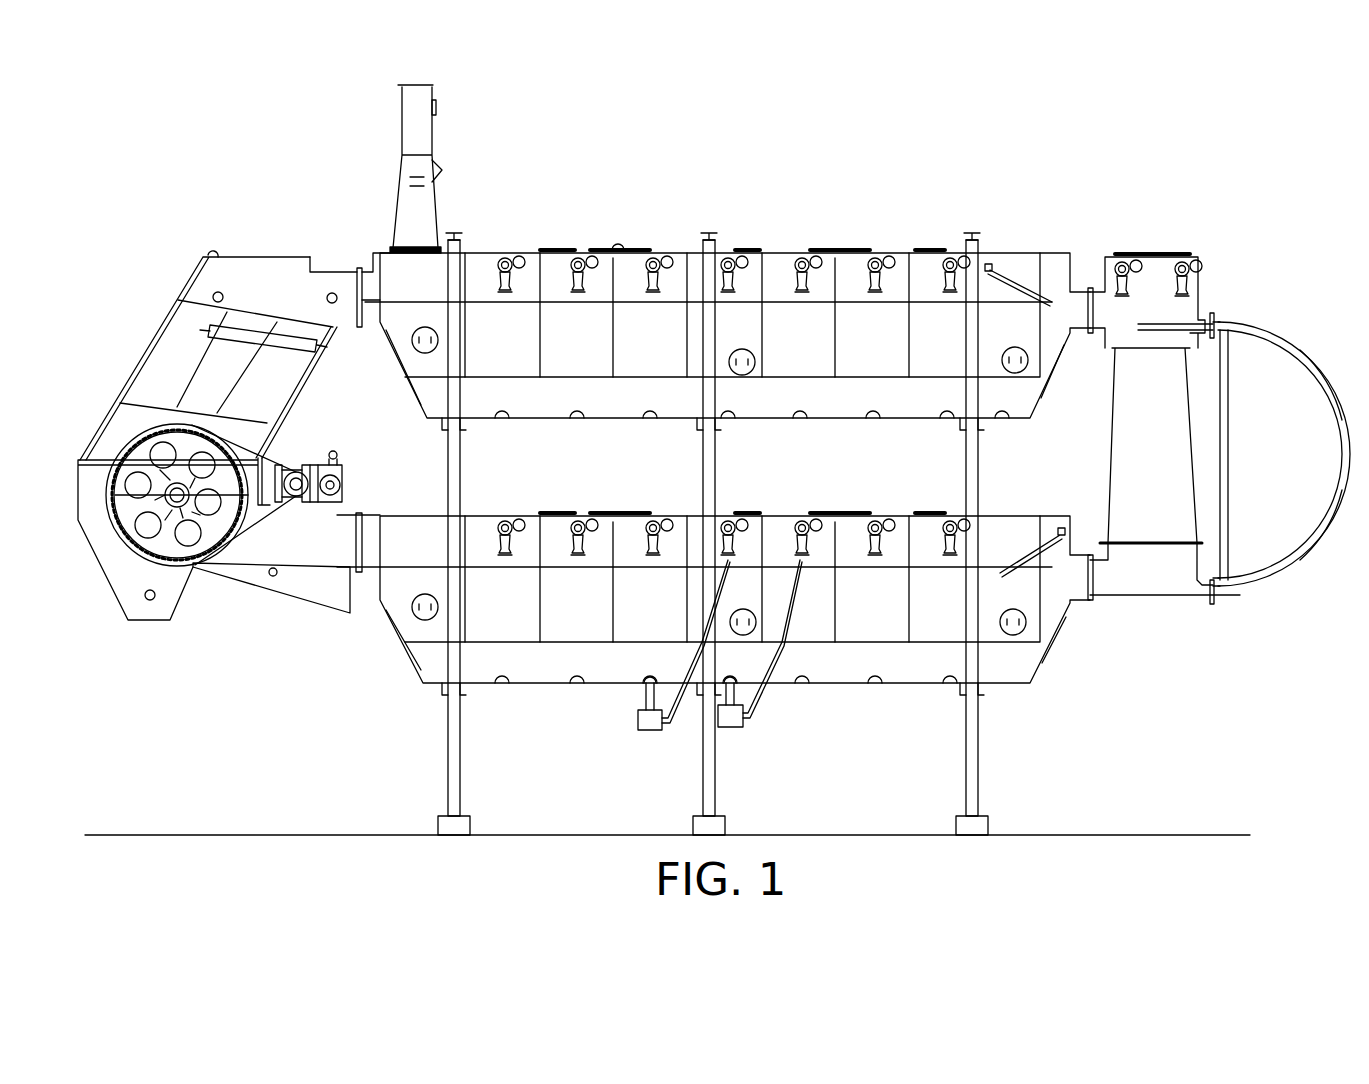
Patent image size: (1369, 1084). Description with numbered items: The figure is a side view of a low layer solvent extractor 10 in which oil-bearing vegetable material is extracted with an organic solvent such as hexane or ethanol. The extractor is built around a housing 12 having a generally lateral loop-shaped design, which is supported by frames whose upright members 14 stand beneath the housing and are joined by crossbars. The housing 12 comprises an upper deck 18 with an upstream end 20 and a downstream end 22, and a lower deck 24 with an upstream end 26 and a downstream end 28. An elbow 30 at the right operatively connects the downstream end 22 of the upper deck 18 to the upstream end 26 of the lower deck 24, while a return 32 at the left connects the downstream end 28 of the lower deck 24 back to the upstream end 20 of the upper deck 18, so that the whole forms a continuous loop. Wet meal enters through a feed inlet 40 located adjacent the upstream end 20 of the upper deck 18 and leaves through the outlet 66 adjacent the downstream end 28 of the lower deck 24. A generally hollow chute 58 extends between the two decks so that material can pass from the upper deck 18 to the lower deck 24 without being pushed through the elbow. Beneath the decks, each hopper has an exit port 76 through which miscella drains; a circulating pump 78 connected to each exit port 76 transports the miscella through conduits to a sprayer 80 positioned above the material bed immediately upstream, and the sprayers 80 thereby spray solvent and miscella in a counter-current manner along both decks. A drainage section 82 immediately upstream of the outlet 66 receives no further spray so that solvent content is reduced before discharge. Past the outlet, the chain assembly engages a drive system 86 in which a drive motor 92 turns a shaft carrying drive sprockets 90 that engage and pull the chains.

The low layer solvent extractor 10 is at (183, 156).
The housing 12 is at (637, 273).
The upright members 14 is at (714, 458).
The upper deck 18 is at (858, 272).
The upstream end of the upper deck 20 is at (371, 270).
The downstream end of the upper deck 22 is at (1080, 292).
The lower deck 24 is at (845, 540).
The upstream end of the lower deck 26 is at (1072, 586).
The downstream end of the lower deck 28 is at (372, 555).
The elbow 30 is at (1318, 372).
The return 32 is at (163, 366).
The feed inlet 40 is at (415, 166).
The chute 58 is at (1138, 438).
The outlet 66 is at (150, 625).
The exit port 76 is at (578, 422).
The circulating pump 78 is at (648, 728).
The sprayer 80 is at (578, 262).
The drainage section 82 is at (300, 585).
The drive system 86 is at (284, 440).
The drive sprockets 90 is at (120, 540).
The drive motor 92 is at (335, 497).